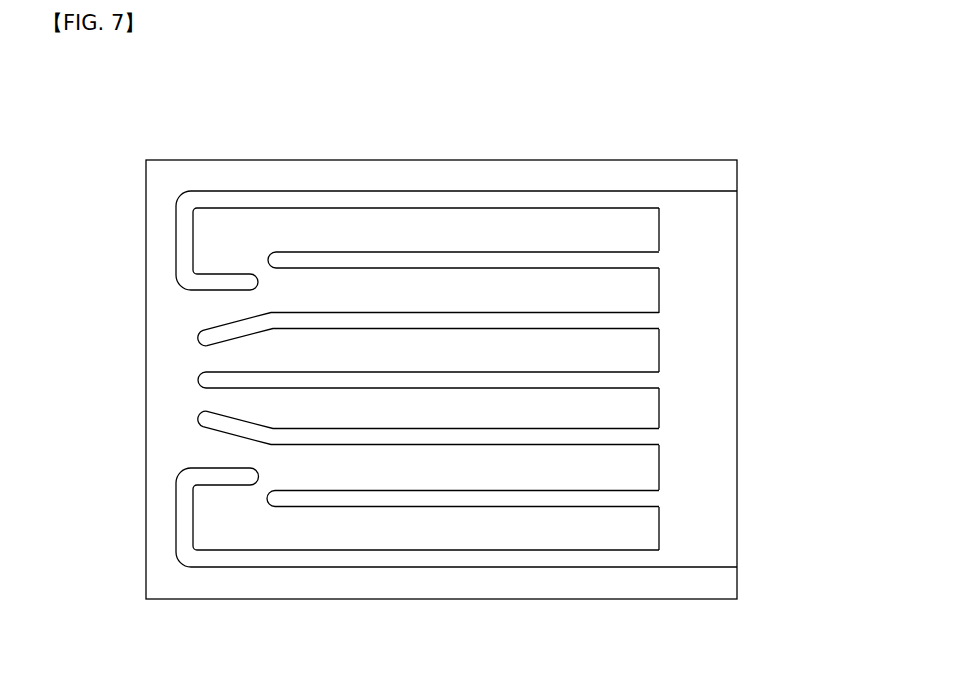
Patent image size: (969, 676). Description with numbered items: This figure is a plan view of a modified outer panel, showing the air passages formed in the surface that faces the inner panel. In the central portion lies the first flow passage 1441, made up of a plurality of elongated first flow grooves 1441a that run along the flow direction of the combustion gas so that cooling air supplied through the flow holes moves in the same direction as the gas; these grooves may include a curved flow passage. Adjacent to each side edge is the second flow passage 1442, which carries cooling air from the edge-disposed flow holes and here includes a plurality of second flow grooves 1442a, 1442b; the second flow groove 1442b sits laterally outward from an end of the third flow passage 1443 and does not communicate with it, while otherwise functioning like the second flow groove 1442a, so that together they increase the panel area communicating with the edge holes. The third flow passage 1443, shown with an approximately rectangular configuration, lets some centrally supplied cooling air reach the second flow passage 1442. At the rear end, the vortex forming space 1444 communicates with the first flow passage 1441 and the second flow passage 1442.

The first flow passage 1441 is at (832, 332).
The first flow grooves 1441a is at (638, 322).
The second flow passage 1442 is at (408, 202).
The second flow groove 1442a is at (638, 200).
The second flow groove 1442b is at (638, 262).
The third flow passage 1443 is at (178, 247).
The vortex forming space 1444 is at (727, 505).